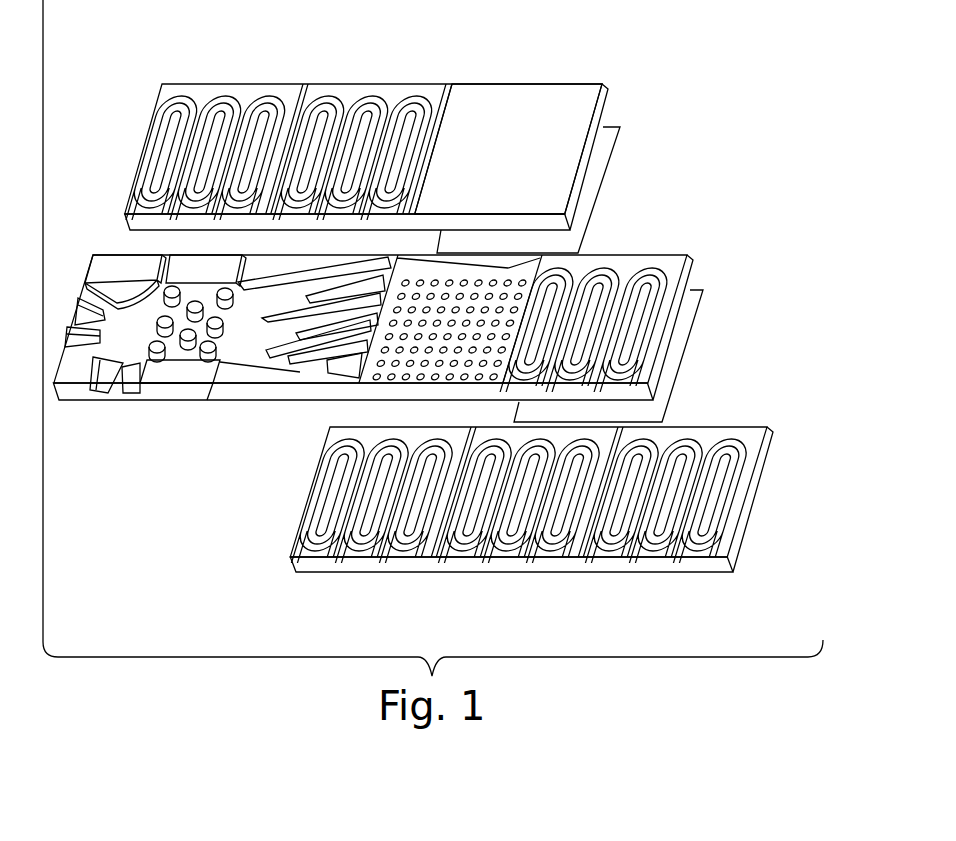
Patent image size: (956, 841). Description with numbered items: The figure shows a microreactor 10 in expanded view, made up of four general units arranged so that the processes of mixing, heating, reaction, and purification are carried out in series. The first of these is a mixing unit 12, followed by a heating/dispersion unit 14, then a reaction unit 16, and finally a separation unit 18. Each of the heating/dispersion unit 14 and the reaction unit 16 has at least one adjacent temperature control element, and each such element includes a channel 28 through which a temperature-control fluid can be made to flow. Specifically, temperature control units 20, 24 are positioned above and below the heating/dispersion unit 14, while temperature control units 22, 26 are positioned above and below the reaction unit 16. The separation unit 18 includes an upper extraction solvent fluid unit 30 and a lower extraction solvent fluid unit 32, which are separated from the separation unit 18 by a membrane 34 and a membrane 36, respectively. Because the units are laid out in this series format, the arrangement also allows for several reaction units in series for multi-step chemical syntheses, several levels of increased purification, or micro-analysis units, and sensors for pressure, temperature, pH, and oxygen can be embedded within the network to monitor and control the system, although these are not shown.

The microreactor 10 is at (128, 58).
The mixing unit 12 is at (151, 428).
The heating/dispersion unit 14 is at (284, 420).
The reaction unit 16 is at (438, 407).
The separation unit 18 is at (630, 241).
The temperature control unit 20 is at (212, 84).
The temperature control unit 22 is at (401, 84).
The temperature control unit 24 is at (390, 568).
The temperature control unit 26 is at (517, 570).
The channel 28 is at (238, 98).
The upper extraction solvent fluid unit 30 is at (544, 90).
The lower extraction solvent fluid unit 32 is at (764, 484).
The membrane 34 is at (608, 169).
The membrane 36 is at (690, 365).